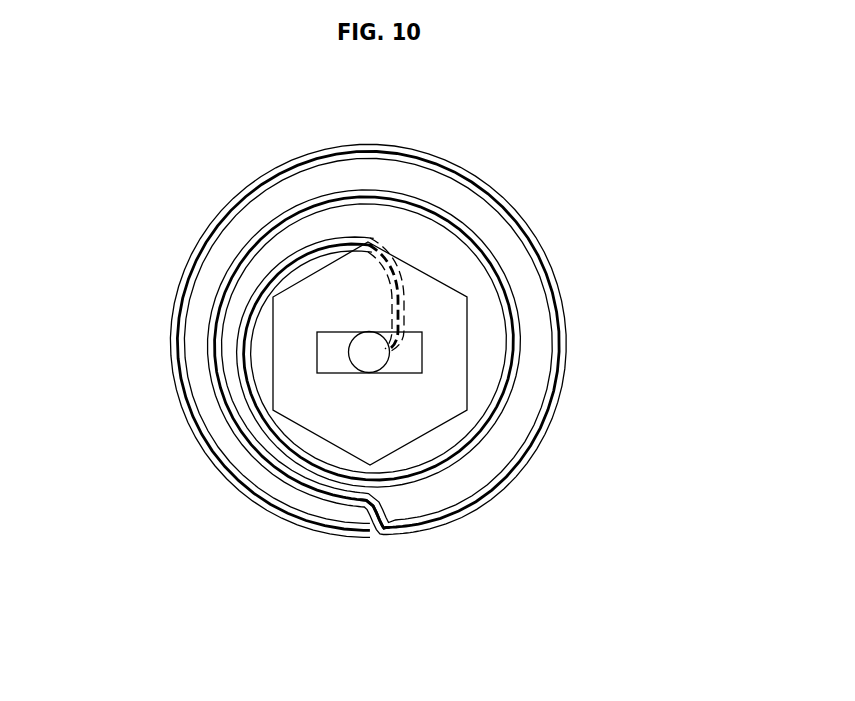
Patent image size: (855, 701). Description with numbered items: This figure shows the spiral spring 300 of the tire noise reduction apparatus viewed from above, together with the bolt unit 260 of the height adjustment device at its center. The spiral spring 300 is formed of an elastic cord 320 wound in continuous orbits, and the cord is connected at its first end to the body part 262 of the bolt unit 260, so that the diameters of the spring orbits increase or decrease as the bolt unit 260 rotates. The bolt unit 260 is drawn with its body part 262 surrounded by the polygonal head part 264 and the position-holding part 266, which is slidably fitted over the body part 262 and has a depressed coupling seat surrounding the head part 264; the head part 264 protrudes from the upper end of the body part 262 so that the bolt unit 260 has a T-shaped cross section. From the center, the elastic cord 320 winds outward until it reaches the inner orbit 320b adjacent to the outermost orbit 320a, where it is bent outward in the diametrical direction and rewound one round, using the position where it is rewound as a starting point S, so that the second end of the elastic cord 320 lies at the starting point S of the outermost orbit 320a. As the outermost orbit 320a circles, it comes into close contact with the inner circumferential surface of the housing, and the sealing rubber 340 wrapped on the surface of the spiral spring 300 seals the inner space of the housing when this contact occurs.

The spiral spring 300 is at (263, 162).
The elastic cord 320 is at (240, 349).
The outermost orbit 320a is at (505, 478).
The inner orbit 320b is at (270, 487).
The sealing rubber 340 is at (250, 338).
The bolt unit 260 is at (418, 440).
The body part 262 is at (368, 353).
The head part 264 is at (335, 359).
The position-holding part 266 is at (447, 305).
The starting point S is at (372, 533).